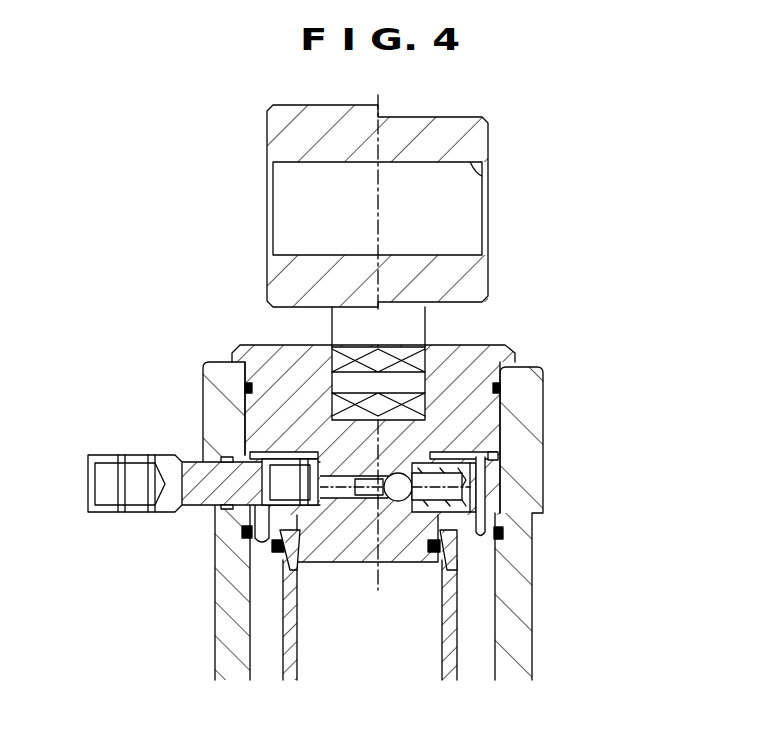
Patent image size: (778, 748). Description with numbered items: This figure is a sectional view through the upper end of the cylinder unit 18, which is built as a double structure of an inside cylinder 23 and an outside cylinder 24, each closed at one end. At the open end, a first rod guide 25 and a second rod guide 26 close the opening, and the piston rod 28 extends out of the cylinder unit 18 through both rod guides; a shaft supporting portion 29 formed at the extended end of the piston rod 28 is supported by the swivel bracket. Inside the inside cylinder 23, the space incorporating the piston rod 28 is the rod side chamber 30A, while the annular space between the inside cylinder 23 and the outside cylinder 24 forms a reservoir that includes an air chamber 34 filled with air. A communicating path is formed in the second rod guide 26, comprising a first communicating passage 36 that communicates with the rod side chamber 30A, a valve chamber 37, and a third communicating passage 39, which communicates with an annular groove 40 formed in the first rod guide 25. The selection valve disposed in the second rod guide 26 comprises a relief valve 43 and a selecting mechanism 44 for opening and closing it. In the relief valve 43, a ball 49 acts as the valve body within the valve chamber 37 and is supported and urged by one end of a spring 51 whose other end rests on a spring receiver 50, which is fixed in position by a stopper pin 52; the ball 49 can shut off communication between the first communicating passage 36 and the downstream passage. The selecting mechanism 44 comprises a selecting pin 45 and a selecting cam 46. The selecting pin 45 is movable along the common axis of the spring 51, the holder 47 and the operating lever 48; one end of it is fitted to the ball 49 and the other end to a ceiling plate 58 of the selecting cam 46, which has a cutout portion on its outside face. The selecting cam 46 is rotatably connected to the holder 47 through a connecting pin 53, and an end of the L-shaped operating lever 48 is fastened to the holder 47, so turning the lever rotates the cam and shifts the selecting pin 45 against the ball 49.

The cylinder unit 18 is at (390, 504).
The inside cylinder 23 is at (305, 616).
The outside cylinder 24 is at (228, 628).
The first rod guide 25 is at (403, 433).
The second rod guide 26 is at (500, 597).
The piston rod 28 is at (334, 326).
The shaft supporting portion 29 is at (482, 176).
The rod side chamber 30A is at (308, 635).
The air chamber 34 is at (496, 636).
The first communicating passage 36 is at (390, 565).
The valve chamber 37 is at (503, 418).
The third communicating passage 39 is at (398, 455).
The annular groove 40 is at (506, 435).
The relief valve 43 is at (552, 522).
The selecting mechanism 44 is at (209, 524).
The selecting pin 45 is at (262, 524).
The selecting cam 46 is at (270, 548).
The holder 47 is at (175, 449).
The operating lever 48 is at (100, 484).
The ball 49 is at (520, 478).
The spring receiver 50 is at (644, 452).
The spring 51 is at (500, 492).
The stopper pin 52 is at (540, 502).
The connecting pin 53 is at (254, 452).
The ceiling plate 58 is at (288, 578).